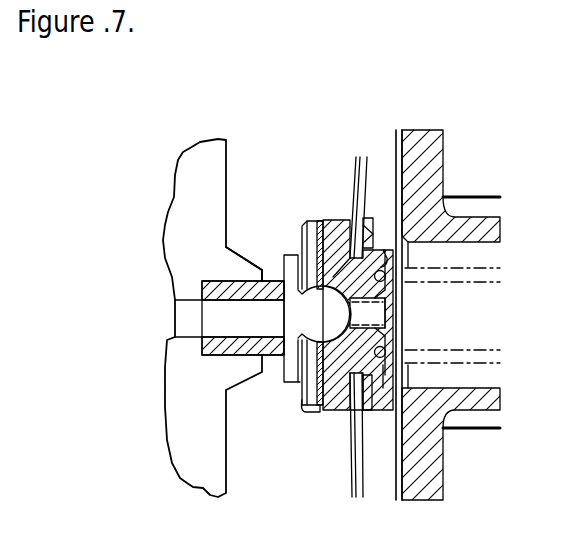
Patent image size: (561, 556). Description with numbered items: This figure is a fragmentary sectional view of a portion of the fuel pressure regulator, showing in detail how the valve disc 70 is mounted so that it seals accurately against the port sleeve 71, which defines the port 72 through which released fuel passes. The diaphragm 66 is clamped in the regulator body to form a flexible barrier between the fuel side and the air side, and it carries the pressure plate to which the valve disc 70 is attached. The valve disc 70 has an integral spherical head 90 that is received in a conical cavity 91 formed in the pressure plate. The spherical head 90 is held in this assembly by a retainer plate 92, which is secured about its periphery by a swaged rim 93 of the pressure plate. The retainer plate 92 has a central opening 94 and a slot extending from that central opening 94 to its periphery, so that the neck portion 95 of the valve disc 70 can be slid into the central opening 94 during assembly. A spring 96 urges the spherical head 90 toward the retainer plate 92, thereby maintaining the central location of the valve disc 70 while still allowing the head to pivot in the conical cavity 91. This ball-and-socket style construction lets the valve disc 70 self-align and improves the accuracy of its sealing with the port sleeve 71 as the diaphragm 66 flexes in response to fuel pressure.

The diaphragm 66 is at (350, 175).
The valve disc 70 is at (288, 247).
The port sleeve 71 is at (268, 270).
The port 72 is at (270, 318).
The spherical head 90 is at (328, 345).
The conical cavity 91 is at (324, 273).
The retainer plate 92 is at (295, 398).
The swaged rim 93 is at (302, 430).
The central opening 94 is at (383, 252).
The neck portion 95 is at (302, 320).
The spring 96 is at (366, 307).